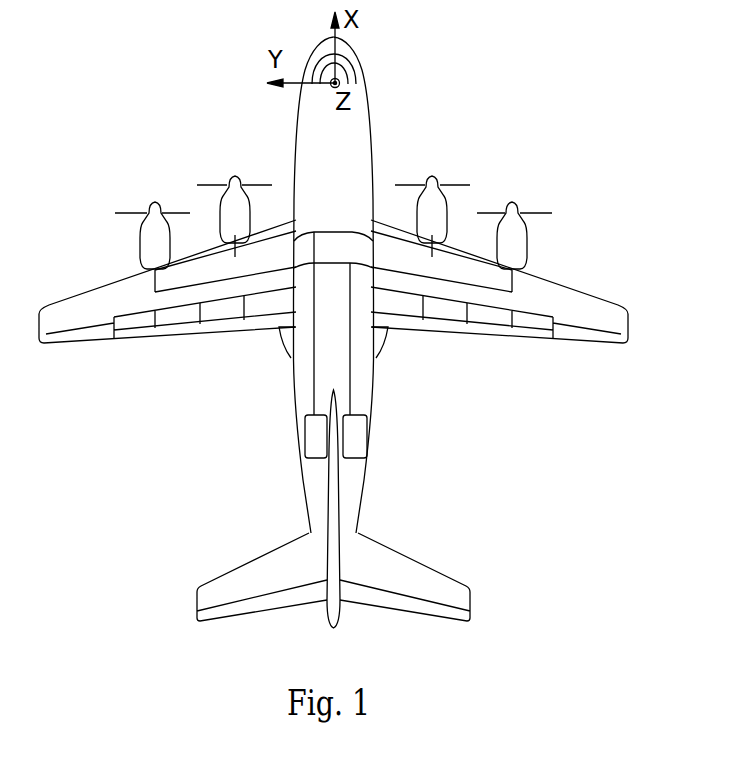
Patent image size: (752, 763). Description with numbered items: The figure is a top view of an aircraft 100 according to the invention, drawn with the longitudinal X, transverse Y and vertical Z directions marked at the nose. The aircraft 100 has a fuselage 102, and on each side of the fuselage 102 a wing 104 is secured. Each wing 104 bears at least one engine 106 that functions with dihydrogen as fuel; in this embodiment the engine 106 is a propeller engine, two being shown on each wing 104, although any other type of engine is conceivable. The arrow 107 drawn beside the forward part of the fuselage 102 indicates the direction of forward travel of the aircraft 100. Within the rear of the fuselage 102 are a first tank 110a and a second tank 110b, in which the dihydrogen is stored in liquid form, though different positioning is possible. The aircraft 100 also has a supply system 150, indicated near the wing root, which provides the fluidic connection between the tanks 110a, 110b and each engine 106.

The aircraft 100 is at (347, 328).
The fuselage 102 is at (353, 497).
The wing 104 is at (605, 320).
The engine 106 is at (513, 238).
The arrow 107 is at (438, 78).
The first tank 110a is at (315, 452).
The second tank 110b is at (483, 426).
The supply system 150 is at (255, 389).